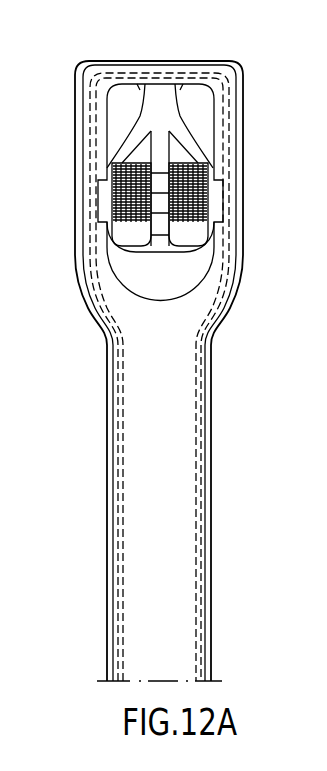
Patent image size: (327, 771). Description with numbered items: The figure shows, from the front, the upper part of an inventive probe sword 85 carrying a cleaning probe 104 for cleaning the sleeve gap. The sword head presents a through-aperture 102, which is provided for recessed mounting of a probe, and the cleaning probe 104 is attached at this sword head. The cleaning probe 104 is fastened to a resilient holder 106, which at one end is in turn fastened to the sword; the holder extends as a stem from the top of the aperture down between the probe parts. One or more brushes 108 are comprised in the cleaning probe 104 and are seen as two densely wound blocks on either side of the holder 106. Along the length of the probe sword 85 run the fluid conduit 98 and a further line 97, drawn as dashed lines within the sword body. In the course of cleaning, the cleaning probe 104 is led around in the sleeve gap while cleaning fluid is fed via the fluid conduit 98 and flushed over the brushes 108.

The probe sword 85 is at (180, 476).
The conductor lead 97 is at (197, 385).
The fluid conduit 98 is at (241, 76).
The through-aperture 102 is at (108, 116).
The cleaning probe 104 is at (175, 259).
The resilient holder 106 is at (160, 93).
The brushes 108 is at (205, 183).